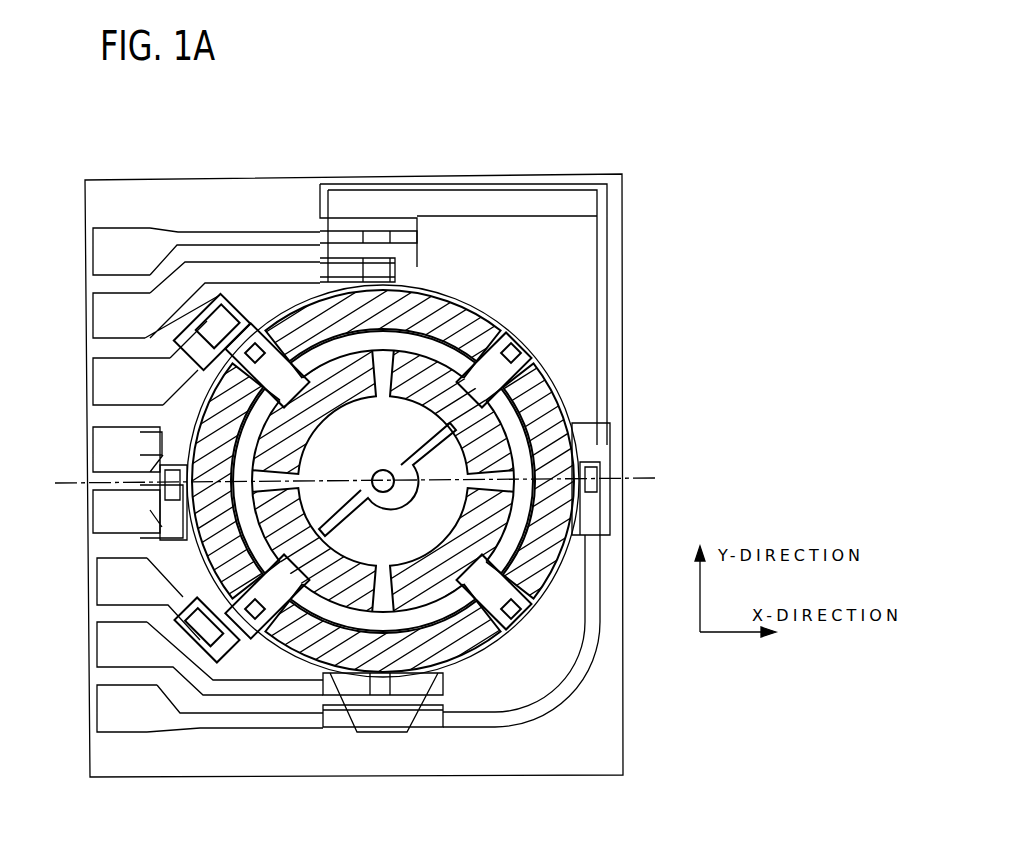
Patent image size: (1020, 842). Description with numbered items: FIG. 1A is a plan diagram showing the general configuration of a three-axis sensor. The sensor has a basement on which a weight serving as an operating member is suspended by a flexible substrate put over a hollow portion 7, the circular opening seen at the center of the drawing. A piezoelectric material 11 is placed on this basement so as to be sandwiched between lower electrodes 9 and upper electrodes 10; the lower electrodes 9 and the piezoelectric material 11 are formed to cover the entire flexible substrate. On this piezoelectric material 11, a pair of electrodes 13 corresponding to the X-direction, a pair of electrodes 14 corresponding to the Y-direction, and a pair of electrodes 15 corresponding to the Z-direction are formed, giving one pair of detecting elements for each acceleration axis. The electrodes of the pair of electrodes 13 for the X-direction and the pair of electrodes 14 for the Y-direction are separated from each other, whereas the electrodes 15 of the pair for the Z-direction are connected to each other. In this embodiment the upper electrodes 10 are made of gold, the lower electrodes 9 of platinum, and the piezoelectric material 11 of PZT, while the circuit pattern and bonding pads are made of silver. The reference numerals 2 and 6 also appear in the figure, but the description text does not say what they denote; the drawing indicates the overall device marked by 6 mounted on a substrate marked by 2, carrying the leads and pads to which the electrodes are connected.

The substrate 2 is at (623, 731).
The micro actuator device 6 is at (660, 181).
The hollow portion 7 is at (520, 292).
The lower electrodes 9 is at (383, 481).
The upper electrodes 10 is at (381, 471).
The piezoelectric material 11 is at (560, 578).
The electrodes corresponding to the X-direction 13 is at (555, 460).
The electrodes corresponding to the Y-direction 14 is at (400, 300).
The electrodes corresponding to the Z-direction 15 is at (485, 385).